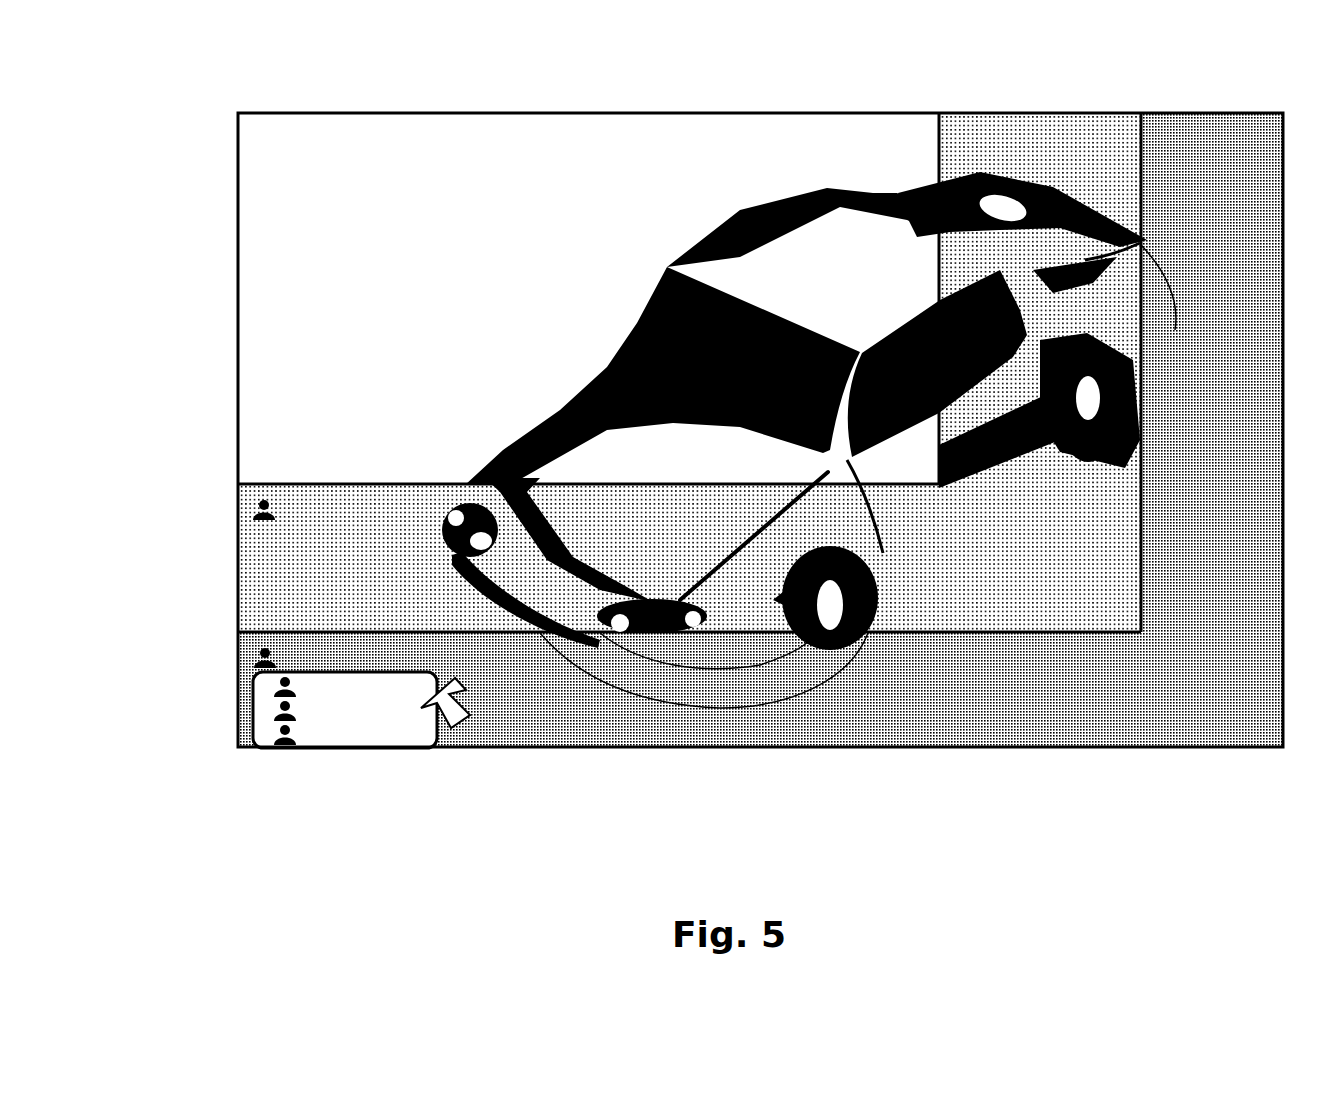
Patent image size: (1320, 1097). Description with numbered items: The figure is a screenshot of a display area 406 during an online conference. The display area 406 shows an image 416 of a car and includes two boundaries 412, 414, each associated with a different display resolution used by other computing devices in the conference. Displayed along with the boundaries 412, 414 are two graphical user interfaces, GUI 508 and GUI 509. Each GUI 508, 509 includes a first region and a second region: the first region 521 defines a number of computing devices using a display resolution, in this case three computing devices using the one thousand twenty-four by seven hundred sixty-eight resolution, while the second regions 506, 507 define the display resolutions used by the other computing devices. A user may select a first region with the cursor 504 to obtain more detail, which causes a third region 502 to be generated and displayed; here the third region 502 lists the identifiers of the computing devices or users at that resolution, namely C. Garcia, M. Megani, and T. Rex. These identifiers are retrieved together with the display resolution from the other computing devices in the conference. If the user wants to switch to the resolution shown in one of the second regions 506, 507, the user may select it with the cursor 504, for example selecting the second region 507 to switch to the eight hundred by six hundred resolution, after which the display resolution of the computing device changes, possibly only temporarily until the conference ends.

The display area 406 is at (1075, 112).
The boundary 412 is at (378, 483).
The boundary 414 is at (357, 632).
The image 416 is at (745, 215).
The third region 502 is at (237, 718).
The cursor 504 is at (434, 748).
The second region 506 is at (498, 672).
The second region 507 is at (370, 484).
The GUI 508 is at (238, 645).
The GUI 509 is at (246, 505).
The first region 521 is at (393, 631).